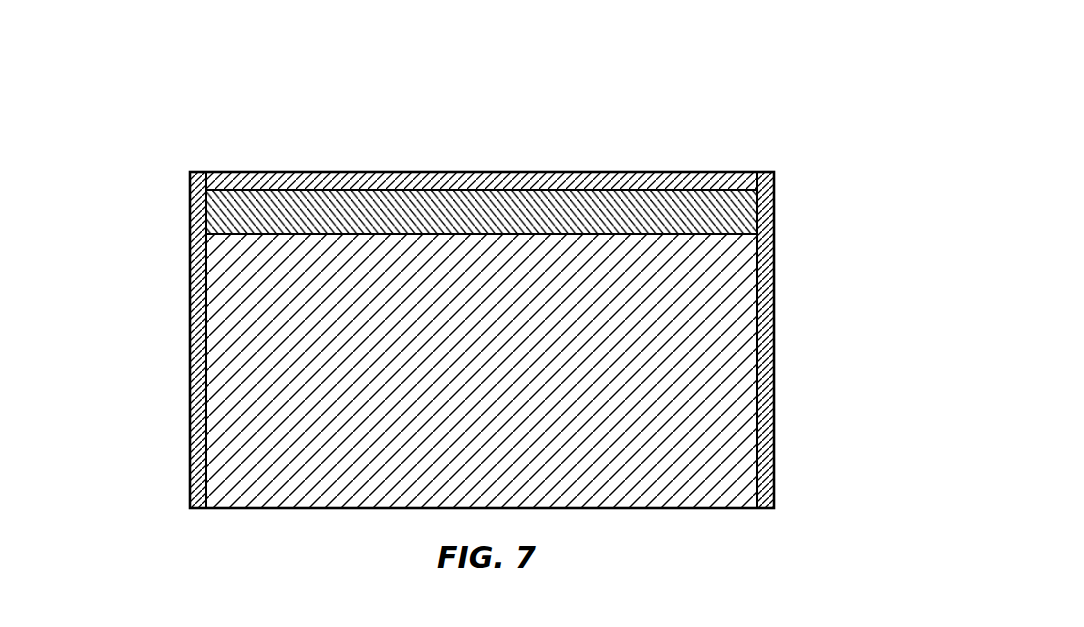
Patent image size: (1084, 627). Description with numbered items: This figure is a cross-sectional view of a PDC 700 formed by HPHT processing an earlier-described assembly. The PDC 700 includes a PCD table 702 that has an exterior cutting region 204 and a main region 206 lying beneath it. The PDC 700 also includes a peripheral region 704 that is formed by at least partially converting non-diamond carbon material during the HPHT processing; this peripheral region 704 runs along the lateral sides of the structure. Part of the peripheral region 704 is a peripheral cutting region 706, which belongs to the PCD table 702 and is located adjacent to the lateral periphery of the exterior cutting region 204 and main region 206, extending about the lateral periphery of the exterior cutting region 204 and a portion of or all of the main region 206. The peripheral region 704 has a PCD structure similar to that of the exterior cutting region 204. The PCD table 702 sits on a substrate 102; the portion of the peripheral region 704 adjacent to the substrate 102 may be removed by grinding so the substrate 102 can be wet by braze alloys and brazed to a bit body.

The PDC 700 is at (751, 122).
The PCD table 702 is at (460, 199).
The peripheral cutting region 706 is at (488, 199).
The exterior cutting region 204 is at (722, 181).
The main region 206 is at (734, 220).
The peripheral region 704 is at (200, 335).
The substrate 102 is at (722, 378).